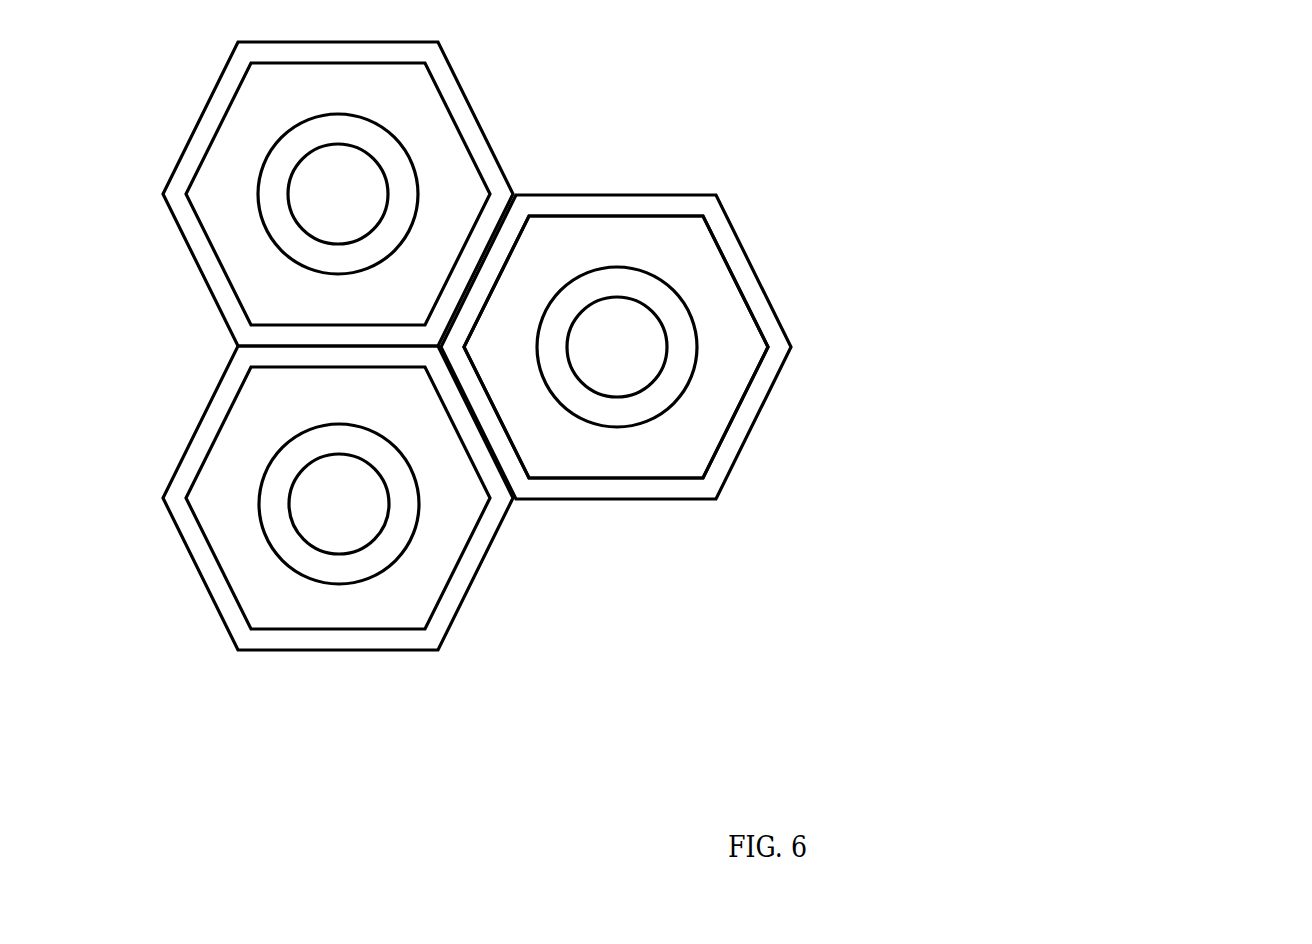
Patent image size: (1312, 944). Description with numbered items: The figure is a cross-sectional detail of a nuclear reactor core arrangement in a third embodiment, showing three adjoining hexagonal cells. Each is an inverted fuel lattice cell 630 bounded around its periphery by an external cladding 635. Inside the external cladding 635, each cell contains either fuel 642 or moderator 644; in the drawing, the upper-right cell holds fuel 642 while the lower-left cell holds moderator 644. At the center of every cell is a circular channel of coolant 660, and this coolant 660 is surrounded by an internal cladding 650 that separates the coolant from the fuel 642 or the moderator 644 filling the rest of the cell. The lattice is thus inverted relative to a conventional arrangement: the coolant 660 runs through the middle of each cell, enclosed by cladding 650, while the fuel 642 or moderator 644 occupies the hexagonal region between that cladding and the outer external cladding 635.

The inverted fuel lattice cell 630 is at (740, 191).
The external cladding 635 is at (741, 242).
The fuel 642 is at (731, 305).
The moderator 644 is at (450, 543).
The cladding 650 is at (687, 337).
The coolant 660 is at (650, 359).